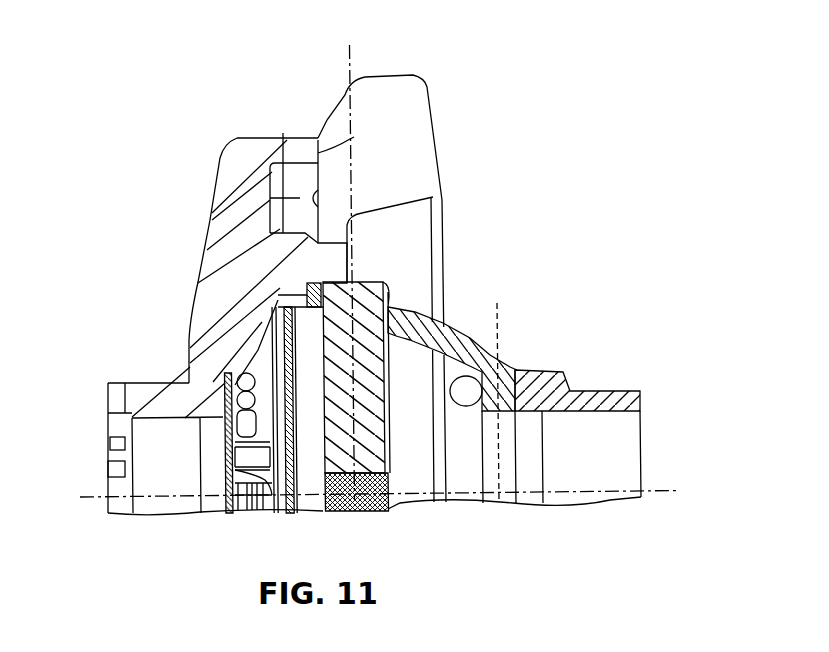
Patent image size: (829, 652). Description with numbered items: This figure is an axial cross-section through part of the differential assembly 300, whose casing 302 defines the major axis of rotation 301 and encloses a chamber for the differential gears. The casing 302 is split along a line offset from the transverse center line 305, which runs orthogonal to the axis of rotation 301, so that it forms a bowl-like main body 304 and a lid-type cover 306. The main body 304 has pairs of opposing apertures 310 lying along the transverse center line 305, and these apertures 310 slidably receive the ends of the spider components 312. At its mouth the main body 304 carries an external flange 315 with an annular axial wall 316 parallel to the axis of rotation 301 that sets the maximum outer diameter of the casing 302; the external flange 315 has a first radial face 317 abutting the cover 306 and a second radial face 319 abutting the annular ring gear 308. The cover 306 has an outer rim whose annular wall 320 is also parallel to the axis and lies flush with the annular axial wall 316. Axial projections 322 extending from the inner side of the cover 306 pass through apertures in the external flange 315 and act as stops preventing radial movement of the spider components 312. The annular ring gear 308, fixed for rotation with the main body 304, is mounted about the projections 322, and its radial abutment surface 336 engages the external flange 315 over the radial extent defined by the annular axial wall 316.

The differential assembly 300 is at (538, 139).
The major axis of rotation 301 is at (672, 490).
The casing 302 is at (181, 142).
The main body 304 is at (622, 390).
The transverse center line 305 is at (352, 65).
The cover 306 is at (138, 397).
The annular ring gear 308 is at (428, 150).
The apertures 310 is at (383, 281).
The spider components 312 is at (388, 473).
The external flange 315 is at (210, 222).
The annular axial wall 316 is at (300, 137).
The first radial face 317 is at (273, 138).
The second radial face 319 is at (352, 138).
The annular wall 320 is at (247, 137).
The projections 322 is at (350, 258).
The radial abutment surface 336 is at (318, 203).